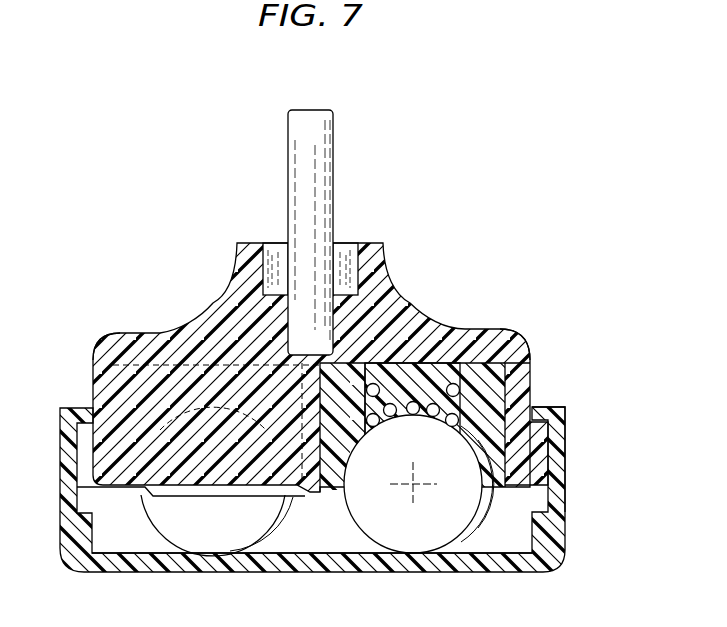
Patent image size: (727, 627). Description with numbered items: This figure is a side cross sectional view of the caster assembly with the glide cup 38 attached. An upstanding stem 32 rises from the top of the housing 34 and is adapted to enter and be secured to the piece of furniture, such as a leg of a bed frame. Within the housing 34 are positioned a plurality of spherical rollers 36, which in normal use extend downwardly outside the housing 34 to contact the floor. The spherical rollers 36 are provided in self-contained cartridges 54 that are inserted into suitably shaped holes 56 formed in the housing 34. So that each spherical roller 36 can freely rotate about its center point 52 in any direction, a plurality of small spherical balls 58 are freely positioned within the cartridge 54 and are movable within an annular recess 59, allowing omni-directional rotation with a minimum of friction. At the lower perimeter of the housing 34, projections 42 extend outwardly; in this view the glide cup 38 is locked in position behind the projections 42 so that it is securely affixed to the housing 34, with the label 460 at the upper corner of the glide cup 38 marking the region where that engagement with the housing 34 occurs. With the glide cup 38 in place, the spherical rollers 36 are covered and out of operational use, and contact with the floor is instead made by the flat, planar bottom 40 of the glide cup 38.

The upstanding stem 32 is at (309, 110).
The housing 34 is at (404, 312).
The spherical rollers 36 is at (142, 500).
The glide cup 38 is at (551, 558).
The flat, planar bottom 40 is at (403, 573).
The projection 42 is at (566, 432).
The center points 52 is at (406, 486).
The cartridges 54 is at (140, 390).
The holes 56 is at (505, 487).
The small spherical balls 58 is at (428, 416).
The annular recess 59 is at (458, 386).
The housing corner 460 is at (563, 407).